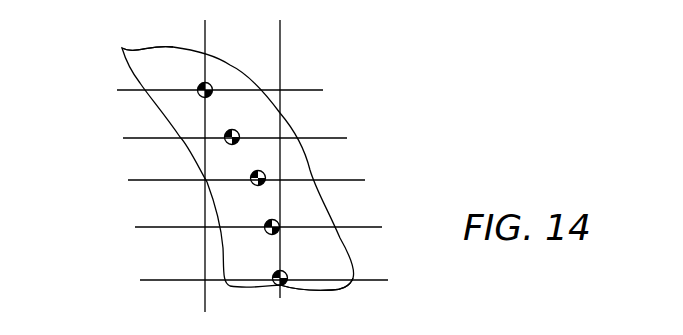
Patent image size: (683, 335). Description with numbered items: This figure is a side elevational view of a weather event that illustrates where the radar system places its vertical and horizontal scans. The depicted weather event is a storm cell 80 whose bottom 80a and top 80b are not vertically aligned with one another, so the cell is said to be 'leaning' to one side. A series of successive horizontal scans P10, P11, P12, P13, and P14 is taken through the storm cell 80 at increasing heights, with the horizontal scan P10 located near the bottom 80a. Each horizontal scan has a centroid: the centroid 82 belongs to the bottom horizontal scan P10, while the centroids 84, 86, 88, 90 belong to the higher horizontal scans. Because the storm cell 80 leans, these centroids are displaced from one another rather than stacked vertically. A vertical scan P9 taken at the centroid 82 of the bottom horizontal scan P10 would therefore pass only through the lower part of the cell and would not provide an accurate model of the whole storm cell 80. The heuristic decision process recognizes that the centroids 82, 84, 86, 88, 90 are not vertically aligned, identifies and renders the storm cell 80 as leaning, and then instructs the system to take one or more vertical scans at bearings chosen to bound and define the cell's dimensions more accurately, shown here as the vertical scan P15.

The storm cell 80 is at (318, 160).
The bottom of the storm cell 80a is at (328, 290).
The top of the storm cell 80b is at (125, 49).
The centroid 82 is at (273, 285).
The centroid 84 is at (275, 234).
The centroid 86 is at (262, 184).
The centroid 88 is at (231, 133).
The centroid 90 is at (201, 83).
The vertical scan P9 is at (281, 48).
The horizontal scan P10 is at (148, 280).
The horizontal scan P11 is at (140, 227).
The horizontal scan P12 is at (133, 180).
The horizontal scan P13 is at (128, 138).
The horizontal scan P14 is at (122, 90).
The vertical scan P15 is at (206, 48).